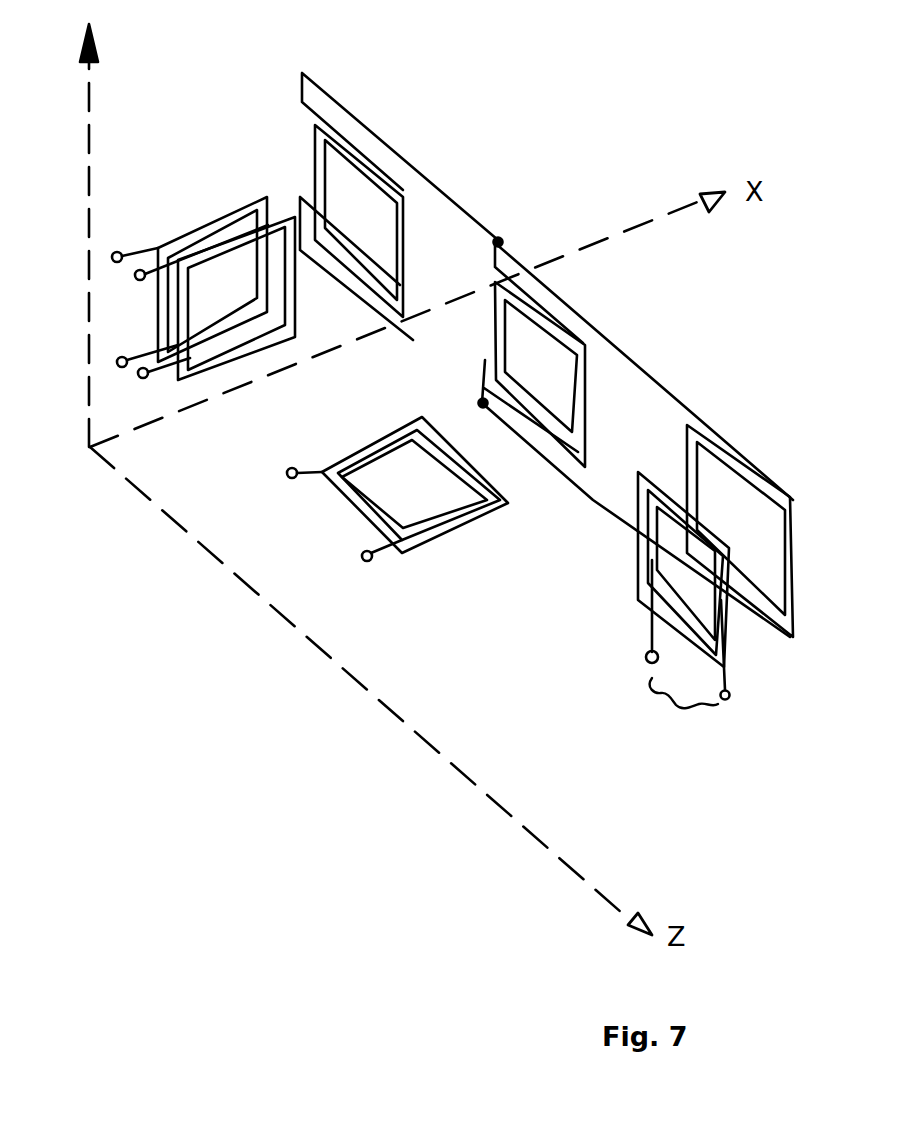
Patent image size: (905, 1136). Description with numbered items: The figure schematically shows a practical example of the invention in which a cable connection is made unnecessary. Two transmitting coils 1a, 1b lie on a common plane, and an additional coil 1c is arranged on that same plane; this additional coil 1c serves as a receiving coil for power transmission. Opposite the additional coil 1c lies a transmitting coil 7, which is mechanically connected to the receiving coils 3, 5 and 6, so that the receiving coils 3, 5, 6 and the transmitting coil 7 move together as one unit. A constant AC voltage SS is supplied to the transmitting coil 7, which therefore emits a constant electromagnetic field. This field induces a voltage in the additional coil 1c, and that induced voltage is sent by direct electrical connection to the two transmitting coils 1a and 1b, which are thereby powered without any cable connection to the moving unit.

The transmitting coil 1a is at (372, 150).
The transmitting coil 1b is at (598, 247).
The additional coil 1c is at (743, 467).
The receiving coil 3 is at (458, 542).
The receiving coil 5 is at (205, 212).
The receiving coil 6 is at (245, 362).
The transmitting coil 7 is at (735, 661).
The constant AC voltage SS is at (684, 712).